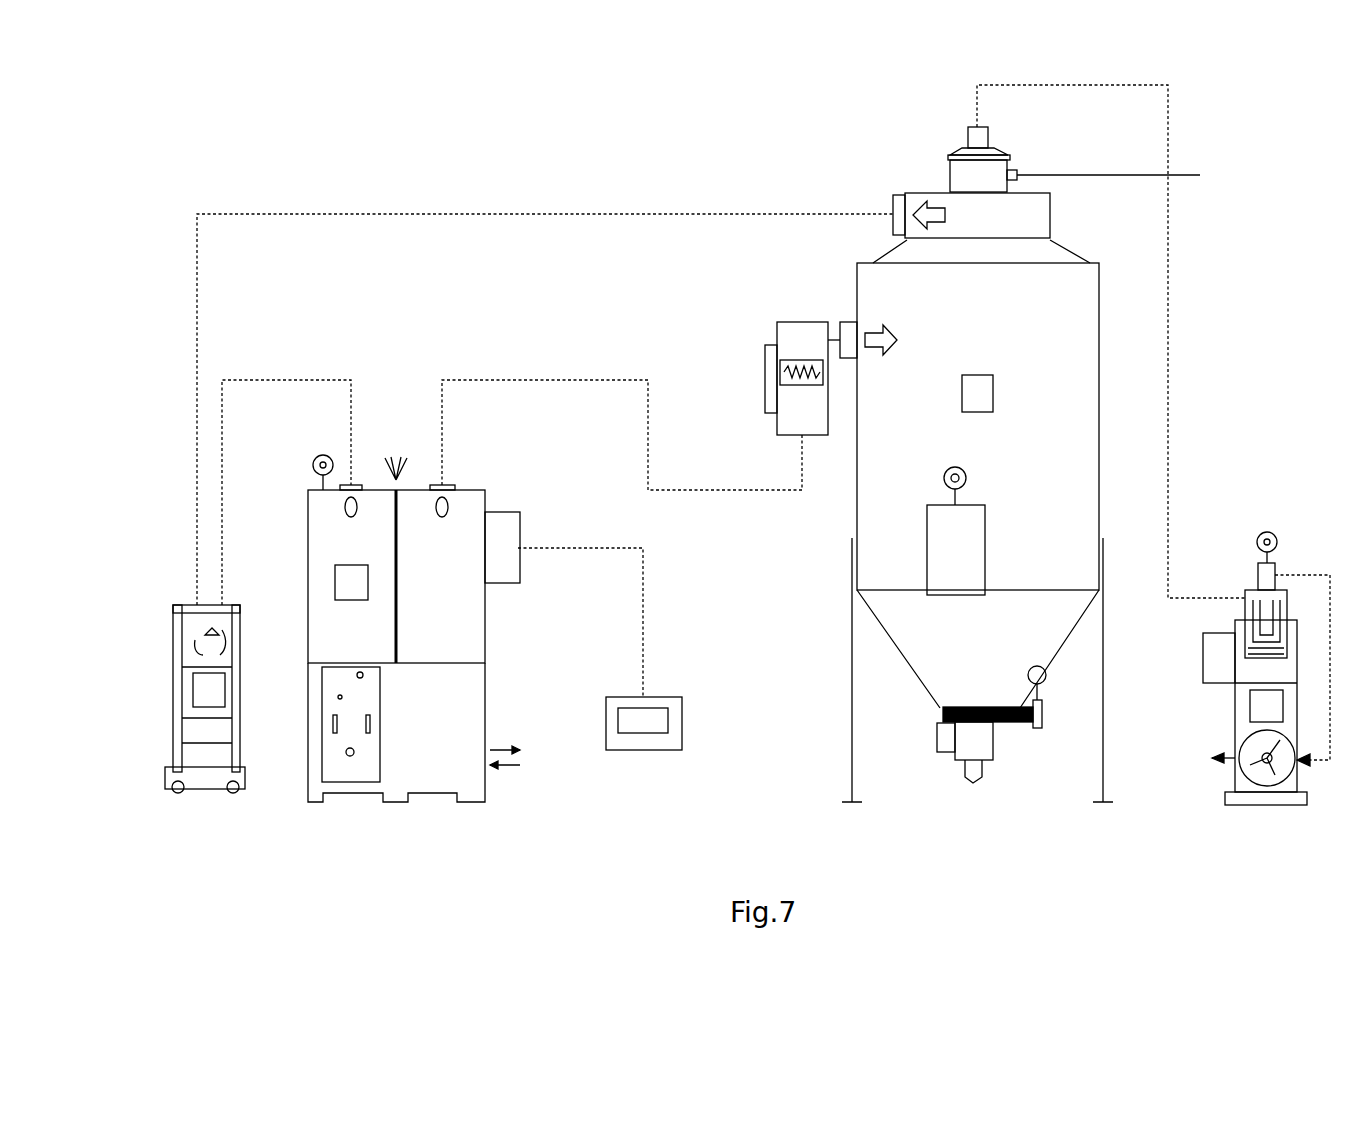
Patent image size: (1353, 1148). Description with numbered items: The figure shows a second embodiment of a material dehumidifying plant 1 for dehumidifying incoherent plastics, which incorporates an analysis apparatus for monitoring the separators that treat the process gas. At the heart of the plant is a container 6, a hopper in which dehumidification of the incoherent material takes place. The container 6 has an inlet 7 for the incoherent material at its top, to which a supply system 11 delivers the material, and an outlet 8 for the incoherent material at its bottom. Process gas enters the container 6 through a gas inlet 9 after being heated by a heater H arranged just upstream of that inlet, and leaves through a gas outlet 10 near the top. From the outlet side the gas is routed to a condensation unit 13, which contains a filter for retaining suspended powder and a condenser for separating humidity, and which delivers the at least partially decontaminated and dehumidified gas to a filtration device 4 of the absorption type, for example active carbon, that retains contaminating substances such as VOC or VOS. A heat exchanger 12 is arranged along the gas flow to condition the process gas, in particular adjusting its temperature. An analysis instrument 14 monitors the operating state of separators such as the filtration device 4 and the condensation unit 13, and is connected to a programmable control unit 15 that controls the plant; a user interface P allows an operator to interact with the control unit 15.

The material dehumidifying plant 1 is at (148, 160).
The filtration device 4 is at (308, 583).
The container 6 is at (1099, 377).
The inlet of the incoherent material 7 is at (950, 176).
The outlet of the incoherent material 8 is at (990, 738).
The inlet of the process gas 9 is at (848, 322).
The outlet of the process gas 10 is at (893, 198).
The supply system 11 is at (1235, 718).
The heat exchanger 12 is at (485, 637).
The condensation unit 13 is at (175, 678).
The analysis instrument 14 is at (433, 790).
The control unit 15 is at (518, 535).
The heater H is at (777, 325).
The user interface P is at (633, 750).